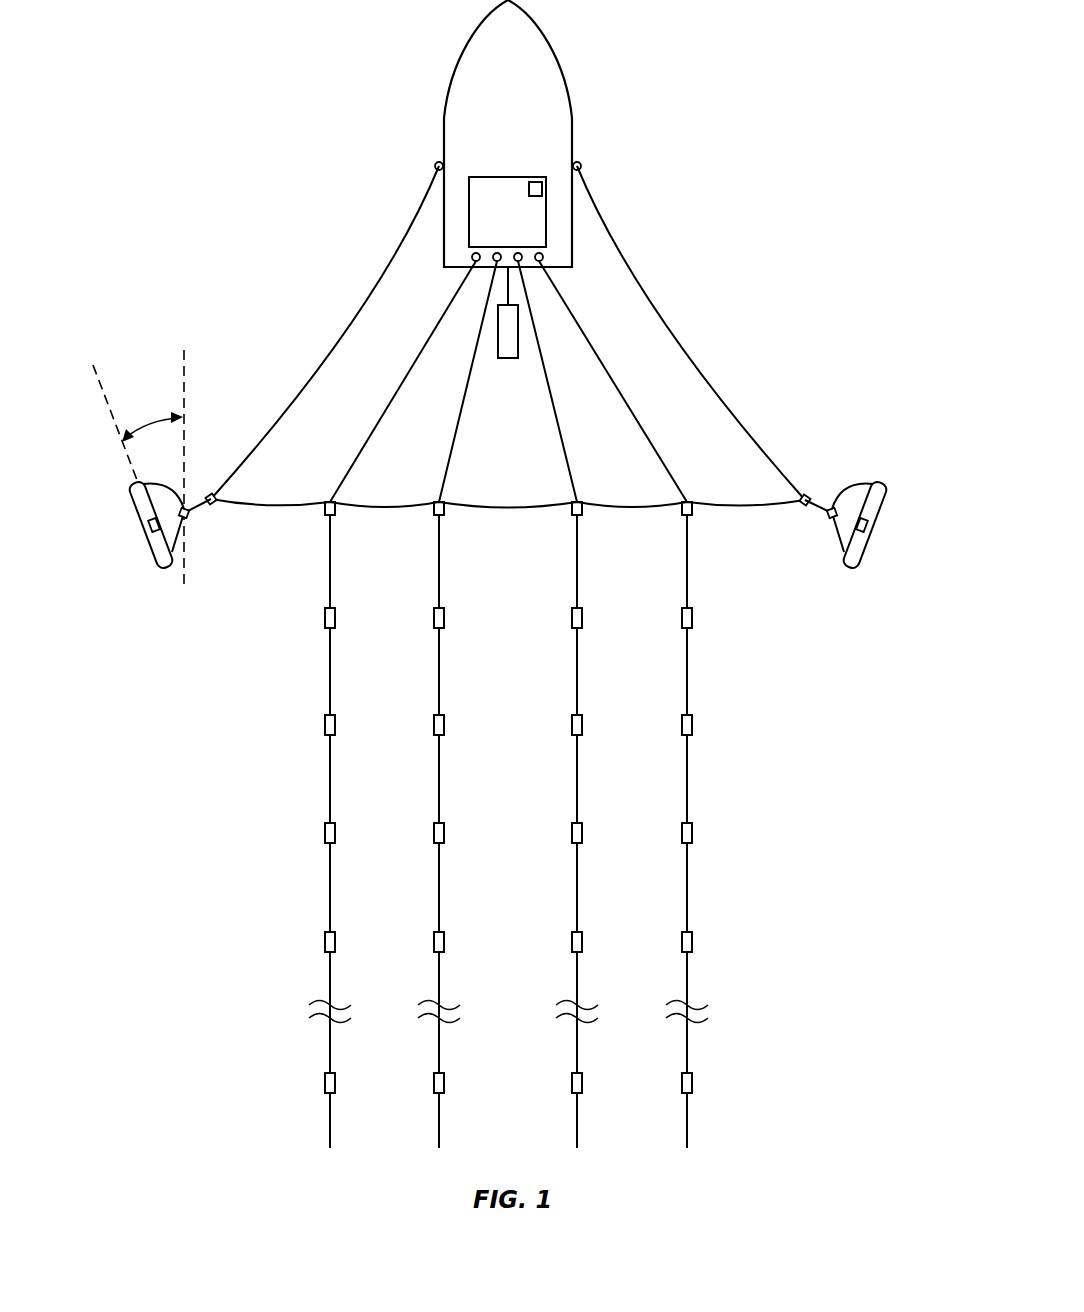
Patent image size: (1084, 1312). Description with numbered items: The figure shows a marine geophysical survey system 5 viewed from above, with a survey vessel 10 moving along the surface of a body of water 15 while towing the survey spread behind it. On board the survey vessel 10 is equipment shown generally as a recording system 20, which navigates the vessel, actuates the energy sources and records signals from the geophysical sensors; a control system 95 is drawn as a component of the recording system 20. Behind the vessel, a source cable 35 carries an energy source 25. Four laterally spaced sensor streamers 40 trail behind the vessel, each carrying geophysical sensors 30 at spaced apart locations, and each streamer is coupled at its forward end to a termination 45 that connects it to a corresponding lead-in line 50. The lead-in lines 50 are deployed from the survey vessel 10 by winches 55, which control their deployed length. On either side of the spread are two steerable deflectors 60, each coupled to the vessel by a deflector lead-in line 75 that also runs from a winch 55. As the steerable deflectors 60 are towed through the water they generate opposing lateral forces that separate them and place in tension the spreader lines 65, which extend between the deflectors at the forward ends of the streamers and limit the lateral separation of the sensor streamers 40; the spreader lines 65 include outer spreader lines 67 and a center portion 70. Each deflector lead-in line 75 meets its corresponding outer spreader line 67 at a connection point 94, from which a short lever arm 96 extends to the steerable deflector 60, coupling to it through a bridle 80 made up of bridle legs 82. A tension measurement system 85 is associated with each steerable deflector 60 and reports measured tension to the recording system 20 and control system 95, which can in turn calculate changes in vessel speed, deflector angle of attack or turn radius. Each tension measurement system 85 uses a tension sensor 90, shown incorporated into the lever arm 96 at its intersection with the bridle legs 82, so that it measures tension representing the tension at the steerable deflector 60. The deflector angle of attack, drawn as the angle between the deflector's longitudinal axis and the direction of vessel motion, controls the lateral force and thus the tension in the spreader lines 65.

The marine geophysical survey system 5 is at (670, 50).
The survey vessel 10 is at (468, 34).
The body of water 15 is at (240, 177).
The recording system 20 is at (508, 177).
The energy source 25 is at (507, 358).
The geophysical sensors 30 is at (336, 618).
The source cable 35 is at (522, 263).
The sensor streamers 40 is at (331, 670).
The terminations 45 is at (334, 502).
The lead-in lines 50 is at (676, 420).
The winch 55 is at (435, 167).
The steerable deflectors 60 is at (136, 500).
The spreader lines 65 is at (386, 514).
The outer spreader lines 67 is at (270, 505).
The center portion 70 is at (508, 508).
The deflector lead-in lines 75 is at (330, 352).
The bridle 80 is at (186, 554).
The bridle legs 82 is at (155, 478).
The tension measurement systems 85 is at (150, 530).
The tension sensor 90 is at (186, 507).
The connection point 94 is at (214, 494).
The control system 95 is at (544, 190).
The lever arm 96 is at (200, 507).